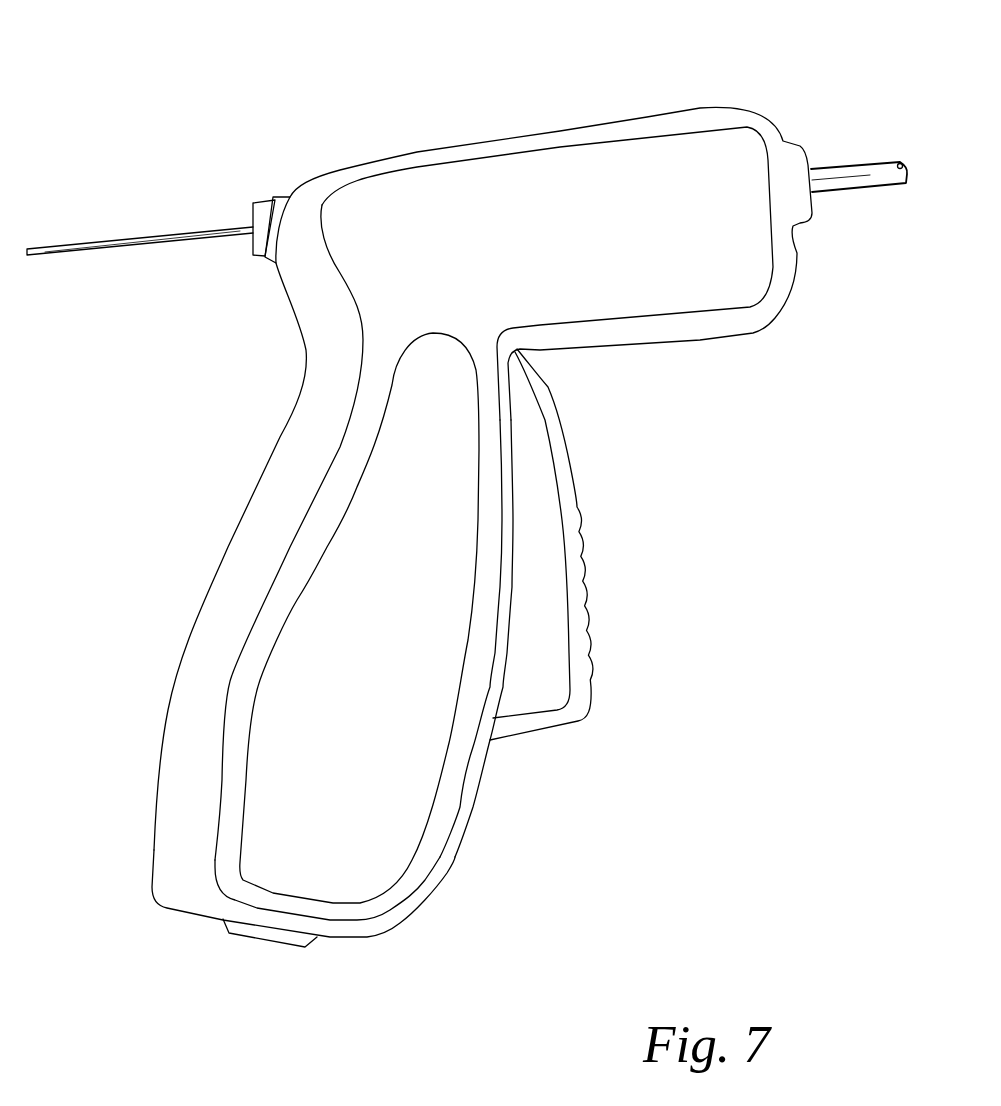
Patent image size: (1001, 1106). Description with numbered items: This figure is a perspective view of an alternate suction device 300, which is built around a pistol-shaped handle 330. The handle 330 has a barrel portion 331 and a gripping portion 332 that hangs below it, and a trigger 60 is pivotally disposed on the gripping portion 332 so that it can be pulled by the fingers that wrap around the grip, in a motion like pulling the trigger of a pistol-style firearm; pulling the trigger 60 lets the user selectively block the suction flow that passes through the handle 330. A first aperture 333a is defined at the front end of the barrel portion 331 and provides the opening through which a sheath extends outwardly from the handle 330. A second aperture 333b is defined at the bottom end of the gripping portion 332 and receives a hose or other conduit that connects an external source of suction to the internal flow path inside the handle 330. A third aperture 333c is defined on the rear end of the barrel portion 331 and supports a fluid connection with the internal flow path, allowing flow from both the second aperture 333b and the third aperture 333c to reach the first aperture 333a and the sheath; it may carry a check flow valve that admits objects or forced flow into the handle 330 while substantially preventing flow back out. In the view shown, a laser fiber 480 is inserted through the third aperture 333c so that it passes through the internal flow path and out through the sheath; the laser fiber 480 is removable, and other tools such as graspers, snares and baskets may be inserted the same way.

The suction device 300 is at (467, 530).
The handle 330 is at (228, 547).
The barrel portion 331 is at (647, 117).
The gripping portion 332 is at (158, 795).
The first aperture 333a is at (863, 157).
The second aperture 333b is at (303, 947).
The third aperture 333c is at (252, 199).
The laser fiber 480 is at (130, 234).
The trigger 60 is at (580, 637).